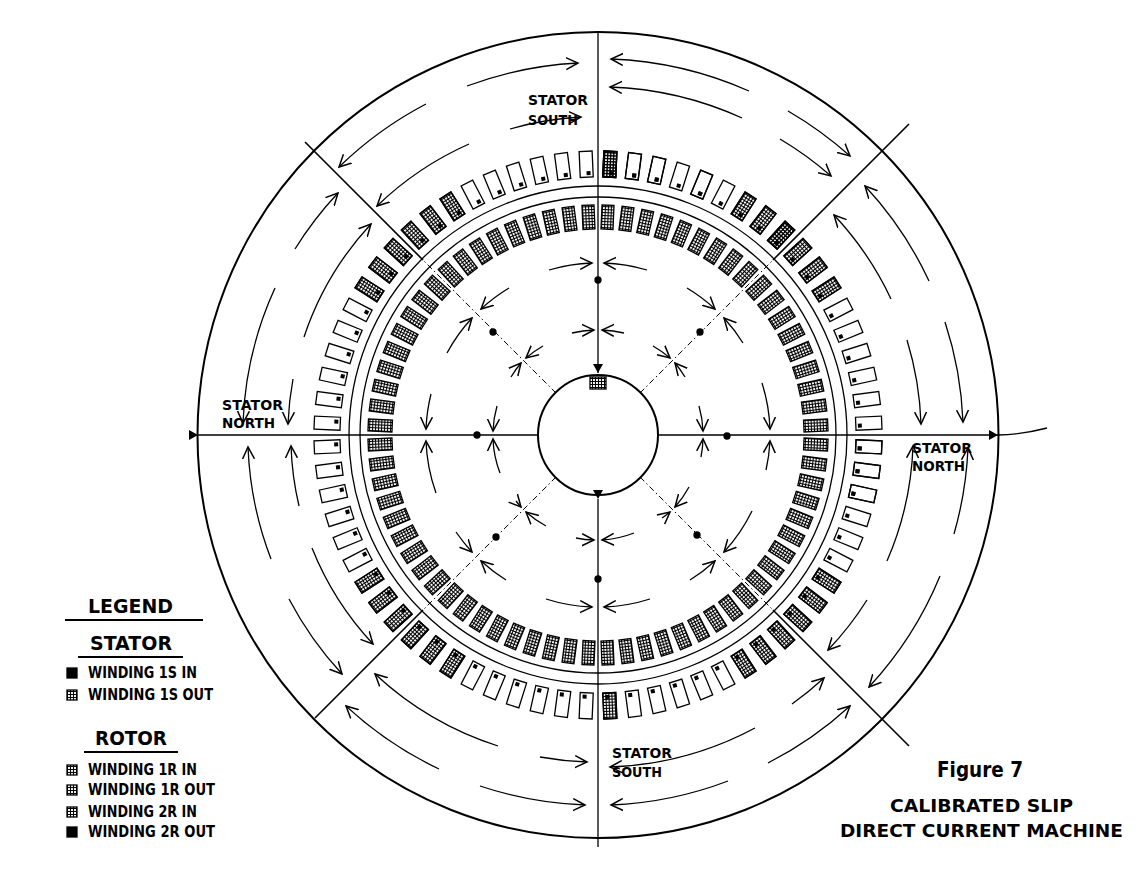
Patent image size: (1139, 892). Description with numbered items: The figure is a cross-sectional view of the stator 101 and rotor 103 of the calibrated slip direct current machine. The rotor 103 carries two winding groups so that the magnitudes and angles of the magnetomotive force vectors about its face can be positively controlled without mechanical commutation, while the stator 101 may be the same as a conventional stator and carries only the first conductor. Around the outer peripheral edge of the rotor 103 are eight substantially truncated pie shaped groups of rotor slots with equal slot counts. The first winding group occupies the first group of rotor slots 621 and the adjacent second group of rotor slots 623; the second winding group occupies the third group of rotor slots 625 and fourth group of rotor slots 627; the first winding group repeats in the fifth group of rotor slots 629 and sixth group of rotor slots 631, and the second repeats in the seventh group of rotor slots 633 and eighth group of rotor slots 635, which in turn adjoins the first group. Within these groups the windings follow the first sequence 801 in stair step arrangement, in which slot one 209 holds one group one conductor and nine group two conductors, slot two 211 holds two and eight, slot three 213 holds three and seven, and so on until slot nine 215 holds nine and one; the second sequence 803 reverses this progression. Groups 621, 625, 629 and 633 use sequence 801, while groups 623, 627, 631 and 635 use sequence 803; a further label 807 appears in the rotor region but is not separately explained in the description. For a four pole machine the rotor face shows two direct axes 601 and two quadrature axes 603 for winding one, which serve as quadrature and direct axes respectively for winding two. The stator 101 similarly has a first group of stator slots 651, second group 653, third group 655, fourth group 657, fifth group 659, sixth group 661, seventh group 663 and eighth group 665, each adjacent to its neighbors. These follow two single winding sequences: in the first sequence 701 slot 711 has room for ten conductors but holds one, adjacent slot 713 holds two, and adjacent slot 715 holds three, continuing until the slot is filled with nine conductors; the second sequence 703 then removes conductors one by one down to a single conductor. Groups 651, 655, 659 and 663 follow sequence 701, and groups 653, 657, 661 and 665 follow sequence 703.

The stator 101 is at (908, 180).
The rotor 103 is at (705, 172).
The slot one 209 is at (611, 149).
The slot two 211 is at (634, 152).
The slot three 213 is at (657, 157).
The slot nine 215 is at (786, 221).
The direct axes 601 is at (623, 563).
The quadrature axes 603 is at (718, 512).
The first group of rotor slots 621 is at (636, 344).
The second group of rotor slots 623 is at (675, 397).
The third group of rotor slots 625 is at (680, 473).
The fourth group of rotor slots 627 is at (636, 518).
The fifth group of rotor slots 629 is at (560, 523).
The sixth group of rotor slots 631 is at (520, 473).
The seventh group of rotor slots 633 is at (520, 397).
The eighth group of rotor slots 635 is at (560, 344).
The first group of stator slots 651 is at (730, 107).
The second group of stator slots 653 is at (914, 304).
The third group of stator slots 655 is at (918, 567).
The fourth group of stator slots 657 is at (730, 755).
The fifth group of stator slots 659 is at (465, 755).
The sixth group of stator slots 661 is at (295, 560).
The seventh group of stator slots 663 is at (321, 324).
The eighth group of stator slots 665 is at (479, 161).
The single winding first sequence 701 is at (583, 424).
The single winding second sequence 703 is at (602, 415).
The slot 711 is at (868, 449).
The slot 713 is at (866, 472).
The slot 715 is at (863, 493).
The first sequence in stair step arrangement 801 is at (568, 431).
The second sequence in stair step arrangement 803 is at (596, 431).
The rotor winding span 807 is at (756, 496).